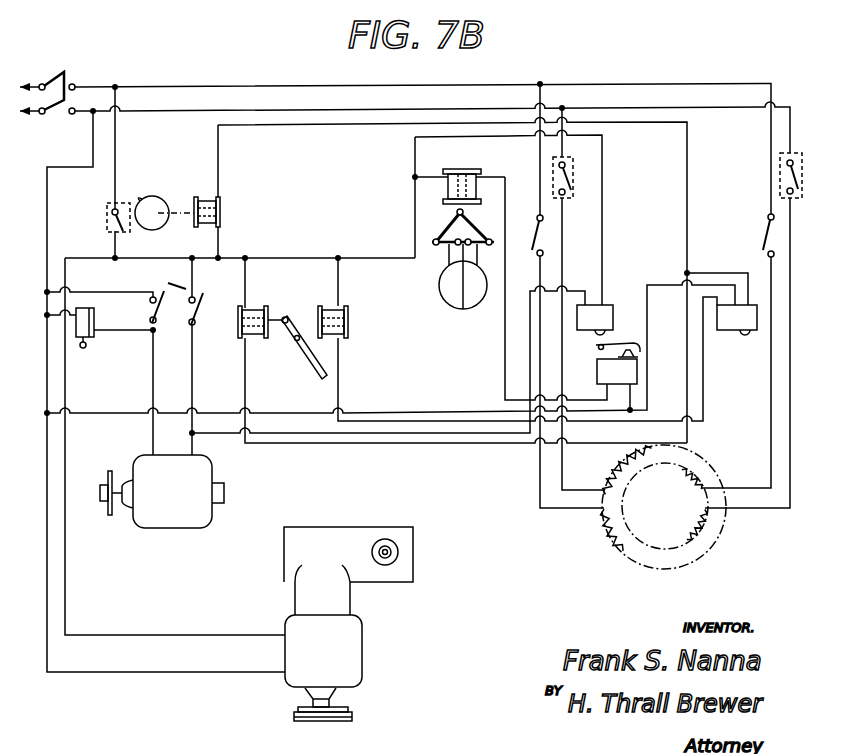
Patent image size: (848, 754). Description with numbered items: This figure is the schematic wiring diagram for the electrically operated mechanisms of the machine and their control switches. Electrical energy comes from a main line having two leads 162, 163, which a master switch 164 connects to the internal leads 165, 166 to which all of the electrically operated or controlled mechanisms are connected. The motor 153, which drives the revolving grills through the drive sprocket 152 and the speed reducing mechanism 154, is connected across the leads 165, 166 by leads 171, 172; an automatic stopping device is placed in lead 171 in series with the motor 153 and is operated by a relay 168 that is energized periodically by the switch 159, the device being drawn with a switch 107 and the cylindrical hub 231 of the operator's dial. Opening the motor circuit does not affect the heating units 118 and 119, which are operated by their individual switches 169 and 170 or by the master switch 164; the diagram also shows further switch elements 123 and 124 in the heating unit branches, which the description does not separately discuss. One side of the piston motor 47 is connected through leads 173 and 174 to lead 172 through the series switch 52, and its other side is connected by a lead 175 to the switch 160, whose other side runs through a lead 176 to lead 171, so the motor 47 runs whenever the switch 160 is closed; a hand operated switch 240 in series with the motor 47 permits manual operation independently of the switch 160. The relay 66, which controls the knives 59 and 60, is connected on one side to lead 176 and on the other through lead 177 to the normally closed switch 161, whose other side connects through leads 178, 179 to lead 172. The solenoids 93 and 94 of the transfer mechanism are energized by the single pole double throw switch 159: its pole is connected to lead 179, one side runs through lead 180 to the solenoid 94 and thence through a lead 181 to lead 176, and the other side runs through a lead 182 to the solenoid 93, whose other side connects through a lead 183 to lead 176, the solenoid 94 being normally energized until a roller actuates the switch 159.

The lead 162 is at (33, 83).
The lead 163 is at (30, 116).
The master switch 164 is at (70, 73).
The lead 166 is at (72, 116).
The lead 165 is at (310, 86).
The lead 172 is at (47, 272).
The lead 171 is at (66, 385).
The lead 176 is at (368, 256).
The switch 107 is at (106, 218).
The cylindrical hub 231 is at (163, 196).
The relay 168 is at (226, 214).
The series switch 52 is at (94, 316).
The lead 174 is at (128, 331).
The hand operated switch 240 is at (181, 286).
The lead 173 is at (153, 363).
The lead 179 is at (470, 390).
The lead 175 is at (302, 421).
The lead 183 is at (249, 268).
The lead 181 is at (337, 279).
The lead 180 is at (704, 378).
The solenoid 93 is at (240, 332).
The solenoid 94 is at (350, 322).
The relay 66 is at (466, 173).
The knife 59 is at (450, 296).
The knife 60 is at (478, 298).
The lead 177 is at (505, 363).
The switch 169 is at (535, 228).
The switch 123 is at (575, 183).
The switch 170 is at (768, 224).
The switch 124 is at (803, 193).
The switch 160 is at (595, 320).
The switch 159 is at (737, 320).
The switch 161 is at (618, 376).
The lead 178 is at (649, 338).
The lead 182 is at (687, 367).
The heating unit 118 is at (615, 545).
The heating unit 119 is at (695, 536).
The motor 47 is at (178, 528).
The speed reducing mechanism 154 is at (338, 527).
The drive sprocket 152 is at (399, 553).
The motor 153 is at (349, 663).